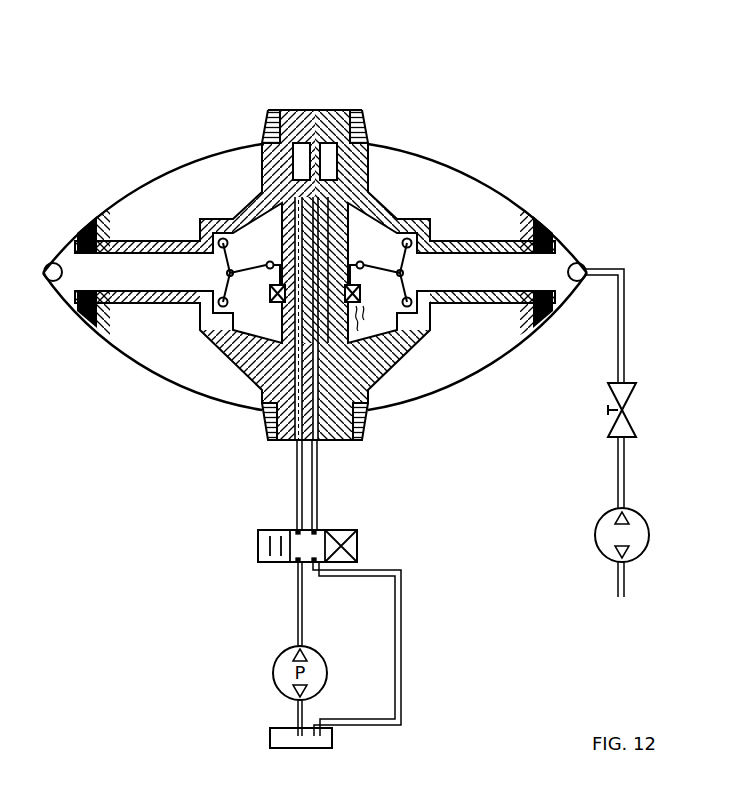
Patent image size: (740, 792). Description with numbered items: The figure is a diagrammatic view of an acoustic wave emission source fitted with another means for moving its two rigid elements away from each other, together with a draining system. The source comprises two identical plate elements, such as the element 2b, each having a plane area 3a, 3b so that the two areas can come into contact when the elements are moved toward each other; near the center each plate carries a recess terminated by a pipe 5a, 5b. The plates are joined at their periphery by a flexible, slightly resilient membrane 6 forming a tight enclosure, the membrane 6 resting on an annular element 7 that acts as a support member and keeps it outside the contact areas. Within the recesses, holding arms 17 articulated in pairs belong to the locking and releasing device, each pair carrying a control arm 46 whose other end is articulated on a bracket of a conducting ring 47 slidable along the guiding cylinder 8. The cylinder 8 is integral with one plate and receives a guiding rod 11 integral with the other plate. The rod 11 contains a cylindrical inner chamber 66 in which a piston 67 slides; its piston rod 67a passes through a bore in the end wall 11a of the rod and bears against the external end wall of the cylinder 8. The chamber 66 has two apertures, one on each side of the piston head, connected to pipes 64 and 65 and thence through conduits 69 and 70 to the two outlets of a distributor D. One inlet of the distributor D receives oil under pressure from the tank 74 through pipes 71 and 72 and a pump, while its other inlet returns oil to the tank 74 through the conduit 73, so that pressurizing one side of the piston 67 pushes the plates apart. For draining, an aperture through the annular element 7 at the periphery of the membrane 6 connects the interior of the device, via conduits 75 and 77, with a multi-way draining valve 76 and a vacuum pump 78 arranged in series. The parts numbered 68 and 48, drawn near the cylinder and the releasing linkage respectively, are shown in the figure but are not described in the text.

The flexible membrane 6 is at (47, 262).
The annular element 7 is at (584, 268).
The plane area 3a is at (527, 218).
The element 2b is at (533, 335).
The holding arm 17 is at (198, 222).
The plane area 3b is at (489, 304).
The end wall 11a is at (278, 110).
The ring 47 is at (402, 217).
The piston 67 is at (268, 157).
The guiding cylinder 8 is at (330, 156).
The piston rod 67a is at (315, 110).
The housing top right 68 is at (343, 109).
The cylindrical inner chamber 66 is at (313, 245).
The pipe 5a is at (372, 142).
The control arm 46 is at (258, 396).
The pipe 5b is at (268, 402).
The guiding rod 11 is at (366, 418).
The pipe 64 is at (273, 441).
The pipe 65 is at (345, 442).
The connecting member 48 is at (380, 302).
The conduit 69 is at (295, 499).
The conduit 70 is at (320, 503).
The distributor D is at (258, 548).
The pipe 71 is at (297, 602).
The conduit 73 is at (398, 643).
The pipe 72 is at (300, 721).
The tank 74 is at (287, 738).
The conduit 75 is at (625, 322).
The draining valve 76 is at (610, 424).
The conduit 77 is at (622, 480).
The vacuum pump 78 is at (596, 533).